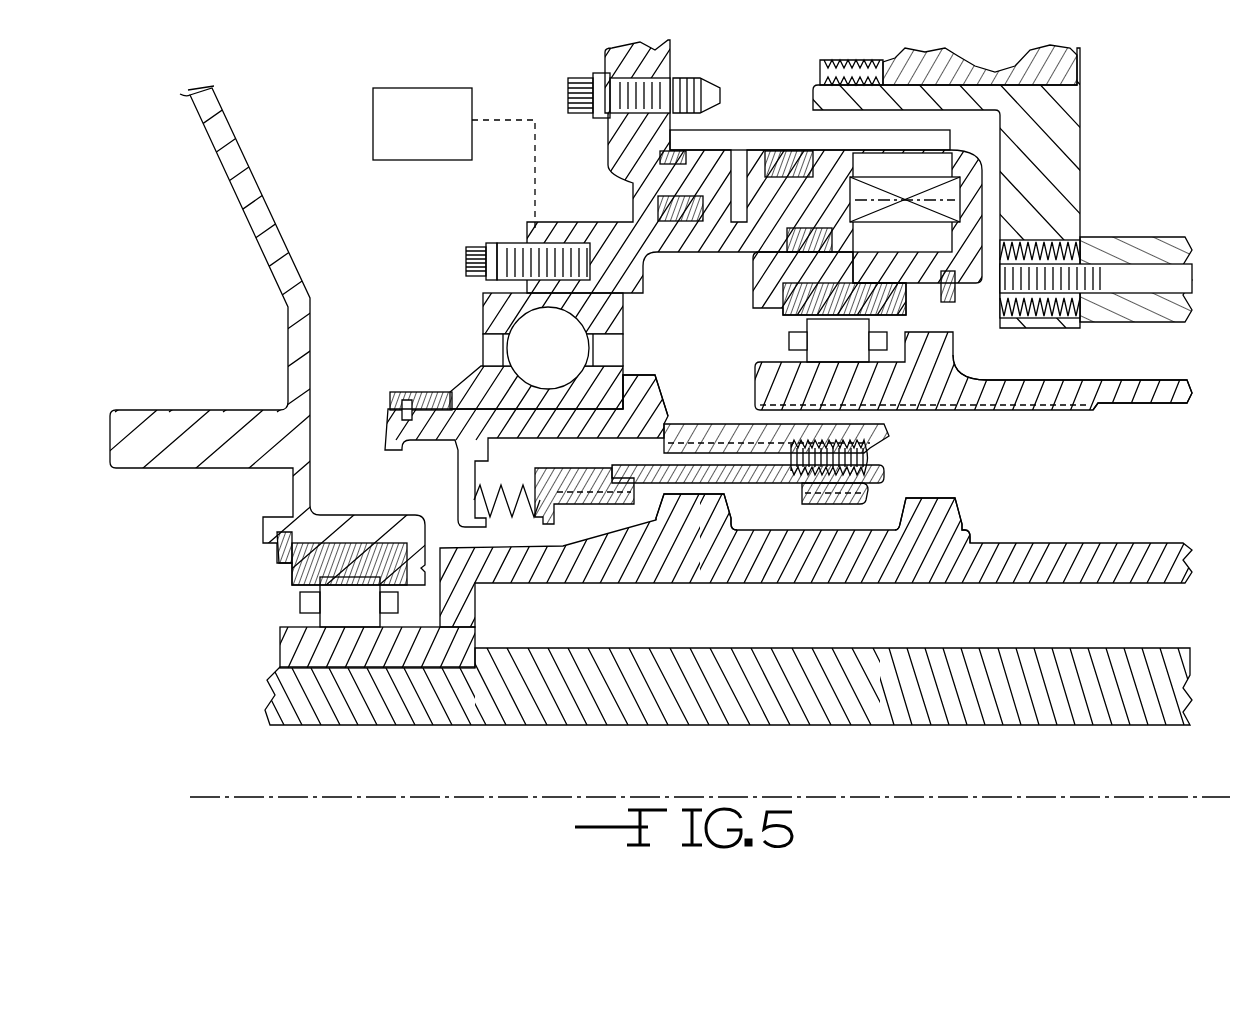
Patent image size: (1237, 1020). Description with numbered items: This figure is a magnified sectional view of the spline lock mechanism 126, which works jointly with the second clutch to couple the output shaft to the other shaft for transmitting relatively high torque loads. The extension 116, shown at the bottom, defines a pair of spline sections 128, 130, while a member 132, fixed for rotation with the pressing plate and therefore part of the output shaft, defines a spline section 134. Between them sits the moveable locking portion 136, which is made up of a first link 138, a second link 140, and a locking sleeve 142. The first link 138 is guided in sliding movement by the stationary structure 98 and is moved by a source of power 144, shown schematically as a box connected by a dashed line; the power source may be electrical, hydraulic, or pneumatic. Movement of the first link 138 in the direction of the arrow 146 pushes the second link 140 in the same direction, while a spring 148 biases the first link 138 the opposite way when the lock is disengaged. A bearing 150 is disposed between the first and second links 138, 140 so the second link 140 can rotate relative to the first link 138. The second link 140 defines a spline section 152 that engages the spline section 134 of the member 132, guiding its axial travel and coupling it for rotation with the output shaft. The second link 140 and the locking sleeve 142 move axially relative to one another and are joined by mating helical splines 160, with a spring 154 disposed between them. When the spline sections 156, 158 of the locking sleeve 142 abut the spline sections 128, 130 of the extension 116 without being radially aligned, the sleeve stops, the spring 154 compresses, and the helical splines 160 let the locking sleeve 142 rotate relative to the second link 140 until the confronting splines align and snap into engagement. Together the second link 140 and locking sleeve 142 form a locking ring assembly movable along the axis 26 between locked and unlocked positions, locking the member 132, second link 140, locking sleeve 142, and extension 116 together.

The axis 26 is at (448, 800).
The stationary structure 98 is at (785, 140).
The extension 116 is at (1100, 556).
The lock mechanism 126 is at (368, 730).
The spline section 128 is at (694, 517).
The spline section 130 is at (930, 515).
The member 132 is at (1127, 398).
The spline section 134 is at (1062, 408).
The locking portion 136 is at (400, 212).
The first link 138 is at (757, 155).
The second link 140 is at (652, 403).
The locking sleeve 142 is at (752, 472).
The source of power 144 is at (373, 120).
The arrow 146 is at (727, 266).
The spring 148 is at (935, 178).
The bearing 150 is at (458, 328).
The spline section 152 is at (864, 426).
The spring 154 is at (510, 515).
The spline section 156 is at (581, 507).
The spline section 158 is at (835, 508).
The helical splines 160 is at (708, 447).